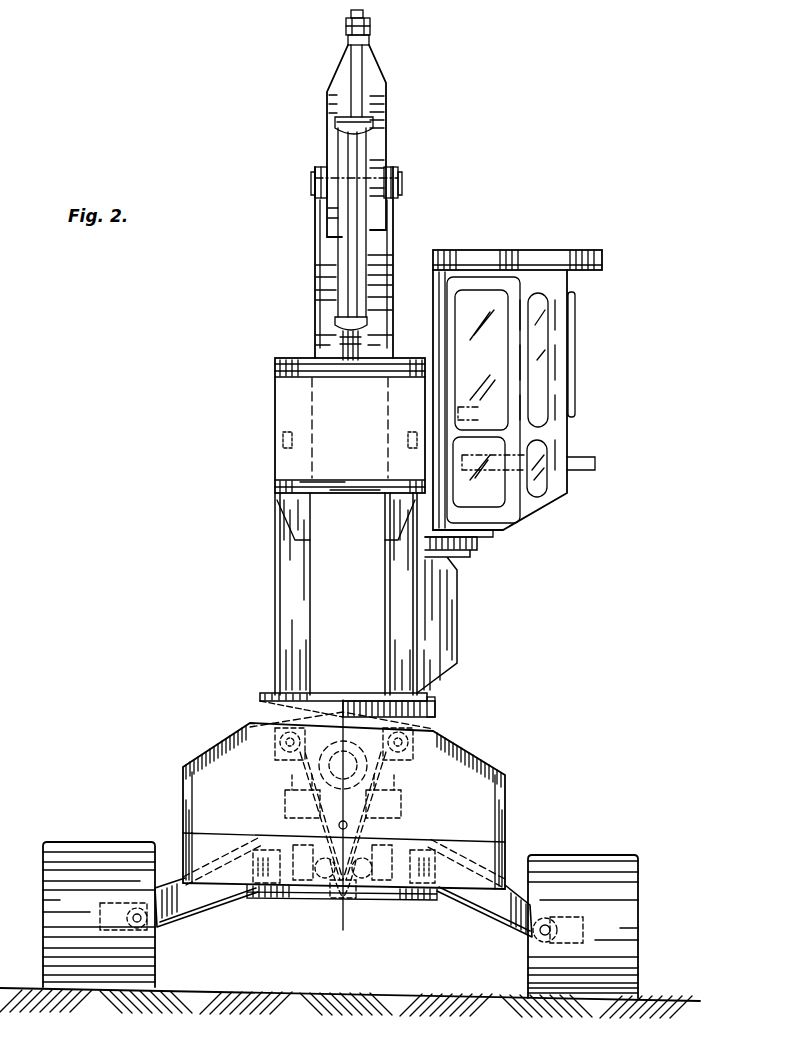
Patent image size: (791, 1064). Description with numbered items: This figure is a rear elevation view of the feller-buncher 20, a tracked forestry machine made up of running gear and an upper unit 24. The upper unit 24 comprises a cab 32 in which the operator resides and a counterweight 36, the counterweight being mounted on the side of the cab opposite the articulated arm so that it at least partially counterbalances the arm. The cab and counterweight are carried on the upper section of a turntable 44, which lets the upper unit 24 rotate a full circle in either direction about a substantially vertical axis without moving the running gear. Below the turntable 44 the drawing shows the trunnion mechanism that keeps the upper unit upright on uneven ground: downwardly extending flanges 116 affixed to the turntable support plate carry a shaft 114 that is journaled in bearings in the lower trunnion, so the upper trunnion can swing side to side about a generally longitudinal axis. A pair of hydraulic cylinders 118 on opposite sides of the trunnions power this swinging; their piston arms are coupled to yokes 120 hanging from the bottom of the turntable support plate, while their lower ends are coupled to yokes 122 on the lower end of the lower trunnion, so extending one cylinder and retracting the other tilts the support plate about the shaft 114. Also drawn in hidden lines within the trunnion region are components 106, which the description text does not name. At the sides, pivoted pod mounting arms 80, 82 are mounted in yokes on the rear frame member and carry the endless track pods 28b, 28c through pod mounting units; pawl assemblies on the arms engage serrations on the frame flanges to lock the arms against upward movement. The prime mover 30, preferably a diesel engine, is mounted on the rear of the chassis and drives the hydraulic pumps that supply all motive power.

The feller-buncher 20 is at (258, 438).
The upper unit 24 is at (597, 346).
The endless track pod 28b is at (88, 842).
The endless track pod 28c is at (590, 855).
The prime mover 30 is at (500, 759).
The cab 32 is at (526, 251).
The counterweight 36 is at (275, 389).
The turntable 44 is at (440, 706).
The pivoted pod mounting arm 80 is at (166, 878).
The pivoted pod mounting arm 82 is at (512, 885).
The support block 106 is at (287, 820).
The shaft 114 is at (290, 766).
The downwardly extending flanges 116 is at (358, 718).
The hydraulic cylinders 118 is at (340, 900).
The yokes 120 is at (266, 735).
The yokes 122 is at (312, 900).